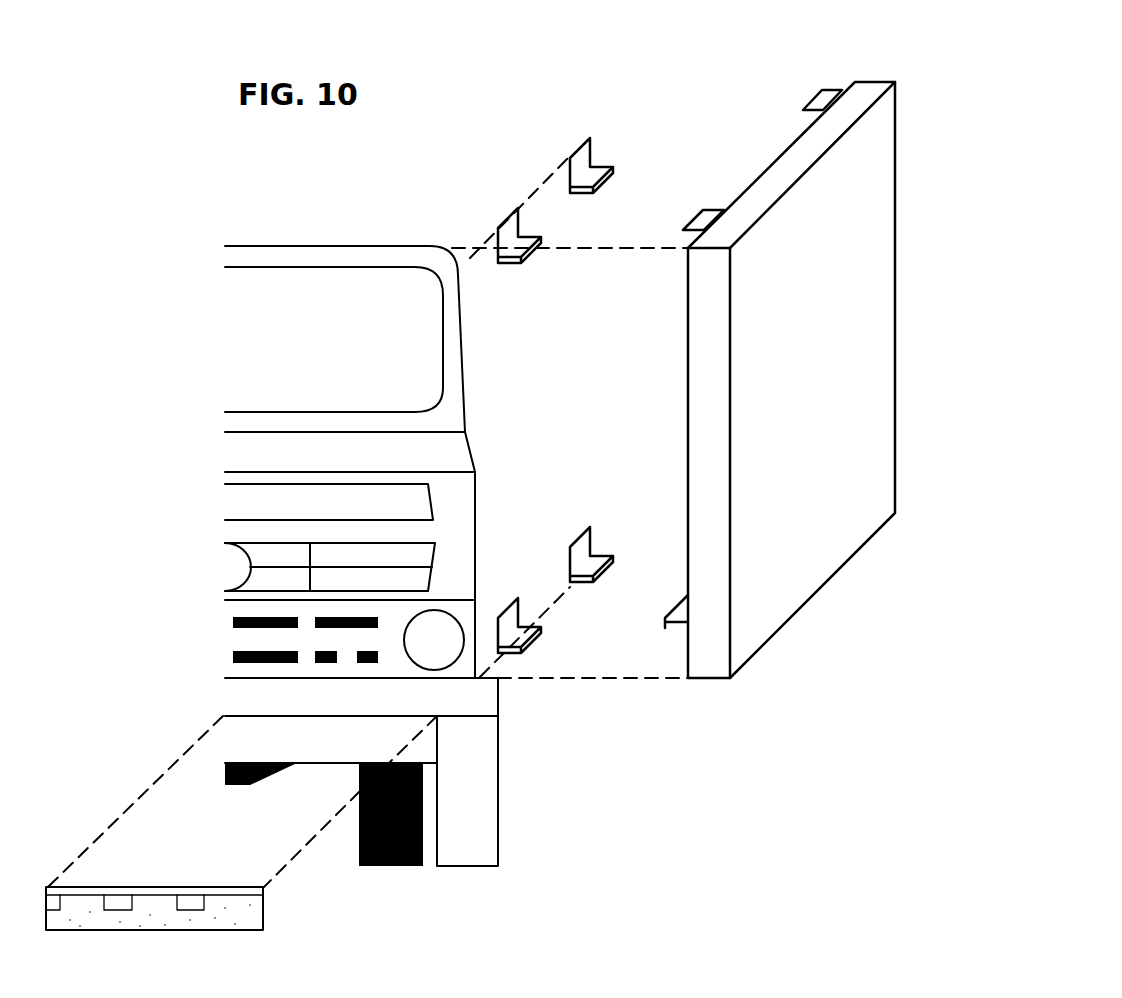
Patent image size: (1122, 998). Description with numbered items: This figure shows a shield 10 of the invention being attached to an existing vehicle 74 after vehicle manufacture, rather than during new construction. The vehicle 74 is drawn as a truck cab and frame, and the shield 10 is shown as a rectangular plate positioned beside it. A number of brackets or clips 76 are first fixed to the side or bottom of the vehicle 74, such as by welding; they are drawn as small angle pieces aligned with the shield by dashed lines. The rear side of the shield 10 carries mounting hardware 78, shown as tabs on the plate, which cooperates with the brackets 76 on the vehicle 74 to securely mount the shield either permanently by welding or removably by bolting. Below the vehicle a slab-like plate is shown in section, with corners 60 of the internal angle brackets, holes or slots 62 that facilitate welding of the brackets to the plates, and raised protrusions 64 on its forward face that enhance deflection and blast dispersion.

The shield 10 is at (814, 109).
The mounting hardware 78 is at (835, 86).
The brackets or clips 76 is at (577, 147).
The vehicle 74 is at (275, 258).
The corners or apices 60 is at (274, 938).
The raised protrusions 64 is at (272, 893).
The holes or slots 62 is at (115, 918).